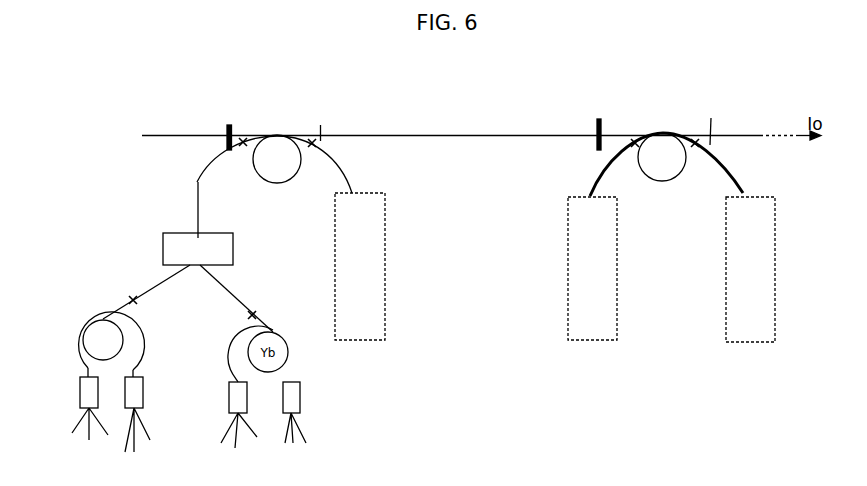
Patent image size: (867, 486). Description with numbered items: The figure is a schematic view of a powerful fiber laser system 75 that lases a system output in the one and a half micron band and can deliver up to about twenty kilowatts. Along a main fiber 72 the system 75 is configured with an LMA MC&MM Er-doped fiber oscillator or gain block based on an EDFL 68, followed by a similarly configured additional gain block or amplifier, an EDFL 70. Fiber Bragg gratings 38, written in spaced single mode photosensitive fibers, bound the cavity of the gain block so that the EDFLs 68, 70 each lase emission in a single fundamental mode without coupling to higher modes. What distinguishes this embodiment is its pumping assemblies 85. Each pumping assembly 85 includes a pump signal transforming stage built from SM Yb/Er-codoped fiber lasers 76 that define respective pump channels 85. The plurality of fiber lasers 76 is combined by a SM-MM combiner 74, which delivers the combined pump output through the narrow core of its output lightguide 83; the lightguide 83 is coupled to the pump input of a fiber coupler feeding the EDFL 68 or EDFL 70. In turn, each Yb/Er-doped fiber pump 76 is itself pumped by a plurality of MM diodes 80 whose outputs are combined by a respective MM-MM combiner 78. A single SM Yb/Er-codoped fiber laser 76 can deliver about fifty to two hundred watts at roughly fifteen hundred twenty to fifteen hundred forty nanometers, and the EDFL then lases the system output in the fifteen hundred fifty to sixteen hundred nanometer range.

The optical fiber 72 is at (157, 135).
The fiber Bragg grating 38 is at (230, 127).
The fiber laser system 75 is at (390, 79).
The EDFL 68 is at (268, 157).
The EDFL 70 is at (650, 162).
The output lightguide 83 is at (198, 212).
The SM-MM combiner 74 is at (183, 243).
The SM Yb/Er-codoped fiber laser 76 is at (97, 330).
The MM-MM combiner 78 is at (80, 385).
The MM diodes 80 is at (73, 435).
The pumping assembly 85 is at (17, 327).